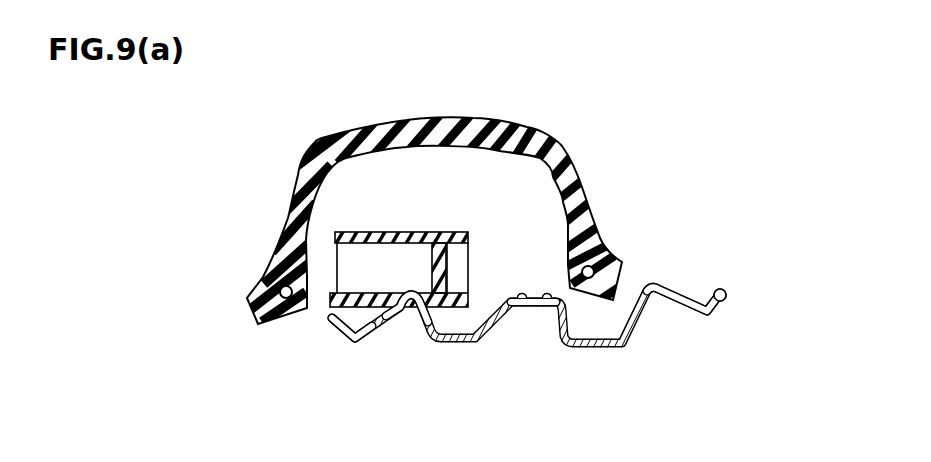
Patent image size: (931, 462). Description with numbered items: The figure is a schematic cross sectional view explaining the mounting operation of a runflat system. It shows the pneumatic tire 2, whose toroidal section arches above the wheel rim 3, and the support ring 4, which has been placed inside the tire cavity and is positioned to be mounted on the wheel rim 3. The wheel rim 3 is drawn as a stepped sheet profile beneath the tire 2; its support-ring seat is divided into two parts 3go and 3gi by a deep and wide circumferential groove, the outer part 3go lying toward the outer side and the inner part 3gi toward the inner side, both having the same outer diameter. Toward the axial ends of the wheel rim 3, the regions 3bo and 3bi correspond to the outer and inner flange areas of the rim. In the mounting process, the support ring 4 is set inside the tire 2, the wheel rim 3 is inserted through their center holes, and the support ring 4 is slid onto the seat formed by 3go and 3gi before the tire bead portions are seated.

The pneumatic tire 2 is at (309, 137).
The support ring 4 is at (362, 232).
The wheel rim 3 is at (501, 328).
The outer bead seat flange of rim 3bo is at (329, 318).
The outer part of support-ring seat 3go is at (396, 320).
The inner part of support-ring seat 3gi is at (517, 307).
The inner bead seat flange of rim 3bi is at (684, 293).